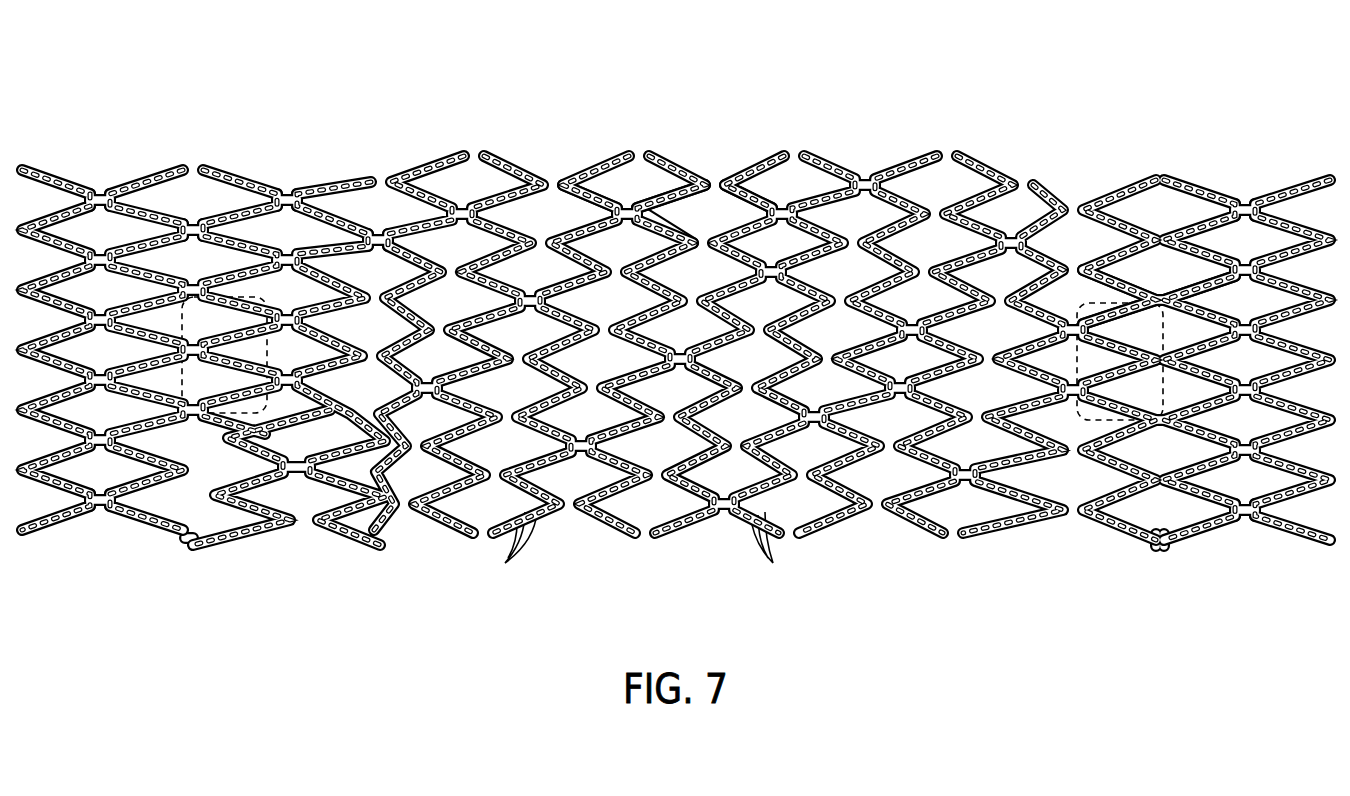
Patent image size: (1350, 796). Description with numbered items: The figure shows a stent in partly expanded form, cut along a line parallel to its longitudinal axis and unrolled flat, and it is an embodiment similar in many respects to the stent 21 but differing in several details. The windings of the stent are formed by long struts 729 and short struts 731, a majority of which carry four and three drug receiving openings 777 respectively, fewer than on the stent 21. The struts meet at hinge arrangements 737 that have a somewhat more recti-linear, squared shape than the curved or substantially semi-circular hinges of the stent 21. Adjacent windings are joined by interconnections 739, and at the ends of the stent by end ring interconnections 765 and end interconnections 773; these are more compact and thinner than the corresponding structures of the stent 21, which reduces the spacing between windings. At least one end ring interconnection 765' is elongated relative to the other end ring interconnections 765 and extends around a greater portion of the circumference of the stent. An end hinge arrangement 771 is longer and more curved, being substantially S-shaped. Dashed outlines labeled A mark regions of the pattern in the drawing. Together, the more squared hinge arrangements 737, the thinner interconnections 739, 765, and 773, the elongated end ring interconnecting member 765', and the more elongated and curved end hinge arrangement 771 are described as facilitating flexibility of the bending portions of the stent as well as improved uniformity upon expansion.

The stent 21 is at (917, 90).
The end ring interconnection 765 is at (682, 359).
The end ring interconnection 765' is at (694, 354).
The end interconnection 773 is at (198, 181).
The hinge arrangement 737 is at (292, 195).
The interconnection 739 is at (378, 236).
The long strut 729 is at (662, 192).
The short strut 731 is at (750, 187).
The end hinge arrangement 771 is at (1154, 295).
The drug receiving openings 777 is at (638, 551).
The detail region A is at (267, 413).